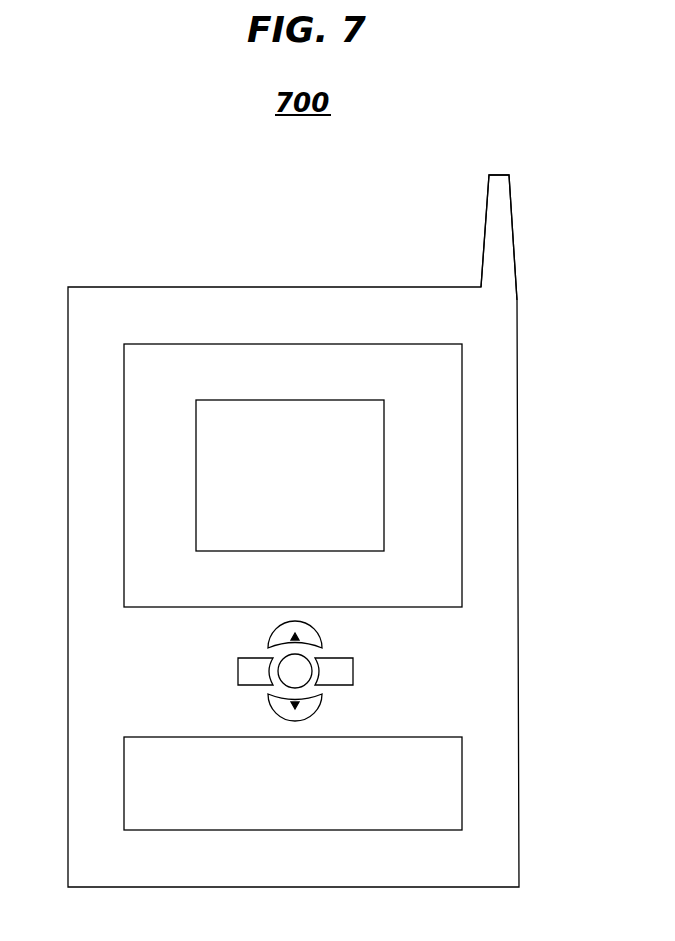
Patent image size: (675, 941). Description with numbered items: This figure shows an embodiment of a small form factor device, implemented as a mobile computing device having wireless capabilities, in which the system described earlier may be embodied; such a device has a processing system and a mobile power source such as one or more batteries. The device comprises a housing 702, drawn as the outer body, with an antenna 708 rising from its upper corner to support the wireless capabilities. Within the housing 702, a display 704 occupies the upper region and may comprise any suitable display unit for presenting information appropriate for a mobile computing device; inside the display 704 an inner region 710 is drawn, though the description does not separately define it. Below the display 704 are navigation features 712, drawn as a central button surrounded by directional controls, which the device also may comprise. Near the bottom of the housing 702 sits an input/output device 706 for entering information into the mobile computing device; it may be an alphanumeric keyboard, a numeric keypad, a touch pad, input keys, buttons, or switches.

The housing 702 is at (519, 620).
The display 704 is at (463, 406).
The input/output (I/O) device 706 is at (463, 790).
The antenna 708 is at (512, 218).
The display window 710 is at (196, 492).
The navigation features 712 is at (356, 657).